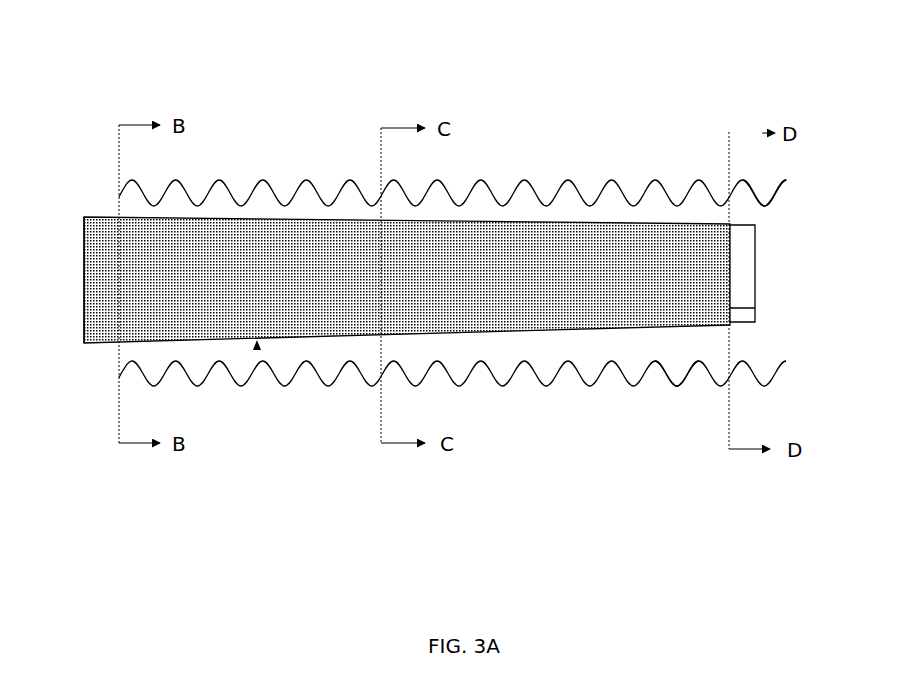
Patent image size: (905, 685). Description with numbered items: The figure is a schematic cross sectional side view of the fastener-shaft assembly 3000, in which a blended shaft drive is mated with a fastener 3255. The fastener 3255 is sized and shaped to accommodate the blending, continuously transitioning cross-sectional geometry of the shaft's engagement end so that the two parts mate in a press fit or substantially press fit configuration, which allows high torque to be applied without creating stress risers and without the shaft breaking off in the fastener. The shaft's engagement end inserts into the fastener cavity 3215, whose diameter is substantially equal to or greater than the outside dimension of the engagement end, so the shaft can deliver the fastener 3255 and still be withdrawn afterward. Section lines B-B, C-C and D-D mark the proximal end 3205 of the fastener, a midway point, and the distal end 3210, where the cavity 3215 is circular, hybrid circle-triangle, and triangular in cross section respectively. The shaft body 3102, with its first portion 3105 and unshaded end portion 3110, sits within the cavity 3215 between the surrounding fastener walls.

The fastener-shaft assembly 3000 is at (376, 52).
The core body 3102 is at (289, 292).
The first end of body 3105 is at (84, 290).
The second end of body 3110 is at (730, 272).
The proximal end 3205 is at (117, 188).
The distal end 3210 is at (783, 186).
The fastener cavity 3215 is at (259, 364).
The fastener 3255 is at (668, 383).